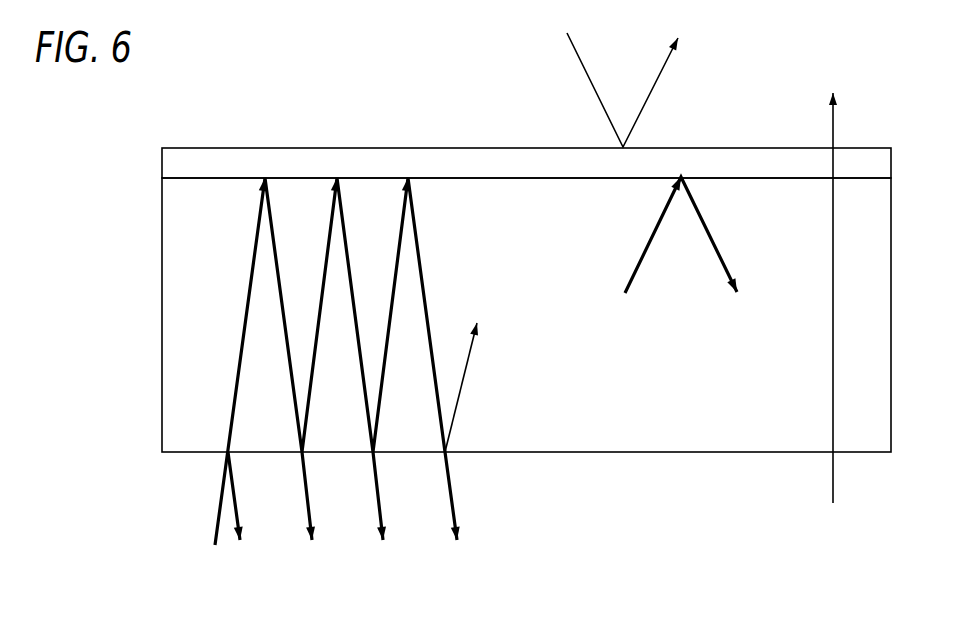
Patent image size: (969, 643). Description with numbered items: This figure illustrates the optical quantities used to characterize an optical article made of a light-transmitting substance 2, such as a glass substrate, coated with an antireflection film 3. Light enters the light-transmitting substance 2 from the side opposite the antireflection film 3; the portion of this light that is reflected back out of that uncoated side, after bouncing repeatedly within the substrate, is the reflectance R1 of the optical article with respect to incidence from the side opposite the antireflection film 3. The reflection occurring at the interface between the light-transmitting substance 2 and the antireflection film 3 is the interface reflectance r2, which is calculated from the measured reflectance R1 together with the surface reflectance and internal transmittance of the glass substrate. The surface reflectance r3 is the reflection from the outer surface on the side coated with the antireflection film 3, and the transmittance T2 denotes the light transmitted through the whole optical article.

The light-transmitting substance 2 is at (162, 302).
The antireflection film 3 is at (162, 165).
The reflectance of optical article with respect to incidence from the side opposite R1 is at (477, 548).
The reflectance at the glass substrate/antireflection film interface r2 is at (687, 249).
The surface reflectance on the side coated with the antireflection film r3 is at (628, 81).
The transmittance of optical article T2 is at (831, 285).